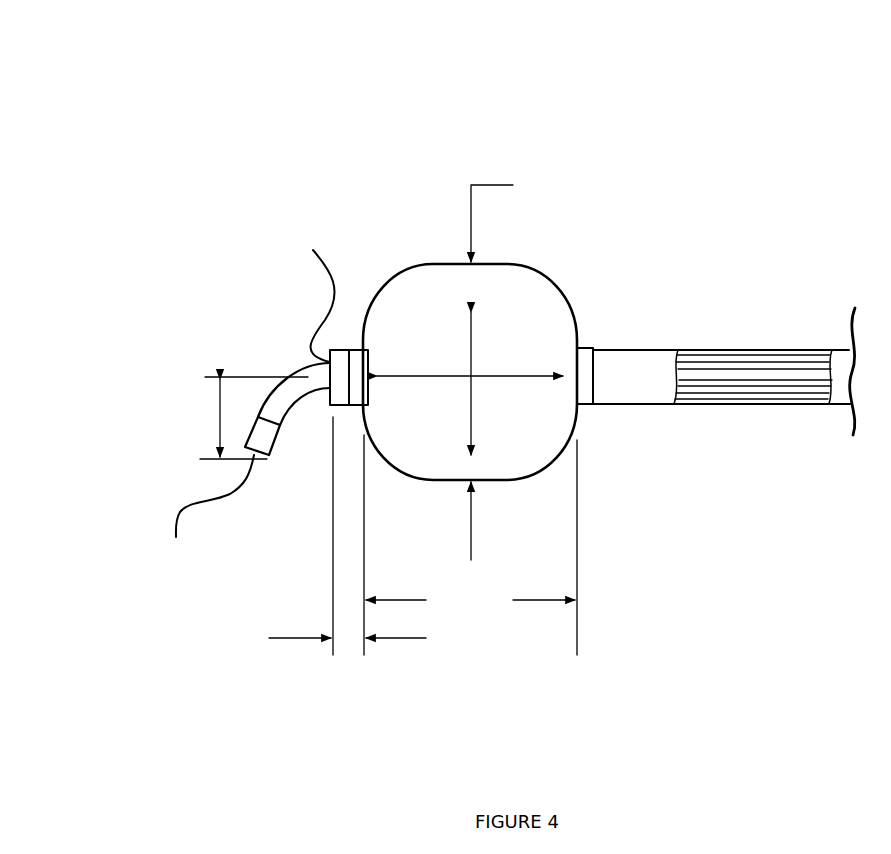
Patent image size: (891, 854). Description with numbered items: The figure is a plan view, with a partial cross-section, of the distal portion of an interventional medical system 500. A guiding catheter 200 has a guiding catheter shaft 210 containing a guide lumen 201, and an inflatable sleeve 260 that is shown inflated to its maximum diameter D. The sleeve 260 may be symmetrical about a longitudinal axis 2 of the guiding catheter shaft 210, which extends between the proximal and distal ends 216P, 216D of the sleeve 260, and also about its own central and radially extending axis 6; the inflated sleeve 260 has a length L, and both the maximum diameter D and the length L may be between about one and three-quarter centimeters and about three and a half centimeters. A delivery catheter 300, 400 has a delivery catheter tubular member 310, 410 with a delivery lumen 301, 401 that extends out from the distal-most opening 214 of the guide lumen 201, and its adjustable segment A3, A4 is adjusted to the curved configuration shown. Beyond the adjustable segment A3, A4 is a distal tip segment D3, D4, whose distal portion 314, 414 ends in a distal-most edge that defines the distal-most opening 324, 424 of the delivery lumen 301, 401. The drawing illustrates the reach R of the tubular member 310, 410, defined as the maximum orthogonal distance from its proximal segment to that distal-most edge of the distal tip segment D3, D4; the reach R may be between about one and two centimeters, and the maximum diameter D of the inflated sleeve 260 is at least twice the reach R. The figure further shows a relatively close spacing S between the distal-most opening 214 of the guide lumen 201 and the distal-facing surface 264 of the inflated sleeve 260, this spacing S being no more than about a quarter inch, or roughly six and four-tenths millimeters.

The interventional medical system 500 is at (605, 108).
The guiding catheter 200 is at (633, 257).
The inflatable sleeve 260 is at (435, 315).
The distal-facing surface 264 is at (368, 316).
The distal end of sleeve 216D is at (358, 362).
The proximal end of sleeve 216P is at (585, 357).
The guiding catheter shaft 210 is at (740, 397).
The guide lumen 201 is at (787, 393).
The delivery catheter tubular member 310 is at (755, 346).
The delivery catheter tubular member 410 is at (722, 367).
The delivery lumen 301 is at (757, 349).
The delivery lumen 401 is at (770, 377).
The central and radially extending axis 6 is at (473, 345).
The longitudinal axis 2 is at (515, 376).
The curved tip tube 300 is at (232, 398).
The curved tip tube 400 is at (223, 367).
The distal-most opening 214 is at (316, 297).
The tip segment 314 is at (290, 474).
The tip segment 414 is at (265, 458).
The distal-most opening of delivery lumen 324 is at (192, 509).
The distal-most opening of delivery lumen 424 is at (192, 509).
The adjustable segment A3 is at (286, 380).
The adjustable segment A4 is at (292, 387).
The distal tip segment D3 is at (288, 449).
The distal tip segment D4 is at (263, 430).
The maximum diameter D is at (504, 367).
The length L is at (470, 545).
The spacing S is at (338, 536).
The reach R is at (254, 418).